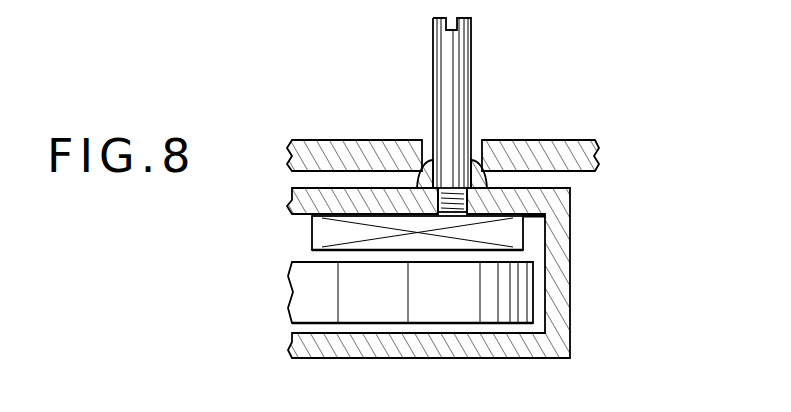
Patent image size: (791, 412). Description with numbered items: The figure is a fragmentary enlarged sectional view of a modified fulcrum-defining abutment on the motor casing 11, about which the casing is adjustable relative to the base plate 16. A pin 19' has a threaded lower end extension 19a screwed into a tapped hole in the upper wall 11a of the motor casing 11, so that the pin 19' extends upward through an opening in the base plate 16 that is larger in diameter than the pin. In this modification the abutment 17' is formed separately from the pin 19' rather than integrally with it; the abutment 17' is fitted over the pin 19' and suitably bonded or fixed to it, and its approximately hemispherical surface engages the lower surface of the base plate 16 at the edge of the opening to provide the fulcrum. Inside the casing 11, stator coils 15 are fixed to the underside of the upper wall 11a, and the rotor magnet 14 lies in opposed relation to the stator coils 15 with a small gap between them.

The base plate 16 is at (604, 143).
The motor casing 11 is at (355, 357).
The upper wall of motor casing 11a is at (369, 193).
The pin 19' is at (485, 103).
The threaded lower end extension 19a is at (443, 211).
The abutment 17' is at (483, 145).
The stator coils 15 is at (515, 232).
The rotor magnet 14 is at (515, 290).